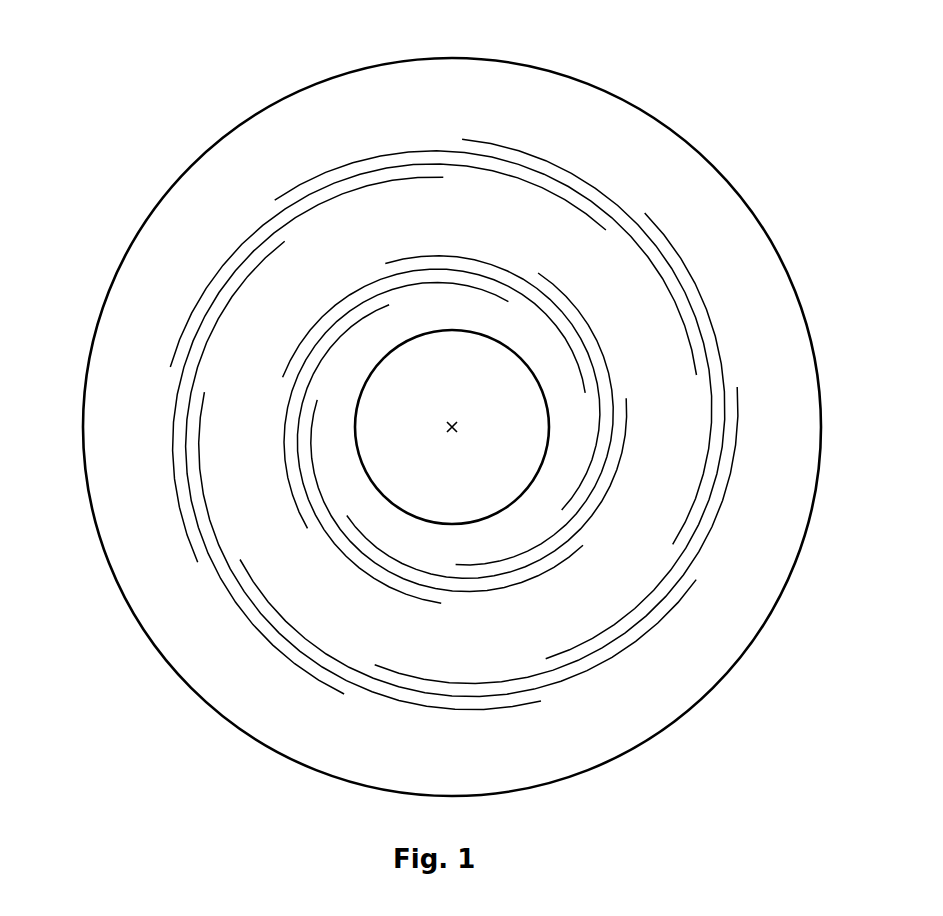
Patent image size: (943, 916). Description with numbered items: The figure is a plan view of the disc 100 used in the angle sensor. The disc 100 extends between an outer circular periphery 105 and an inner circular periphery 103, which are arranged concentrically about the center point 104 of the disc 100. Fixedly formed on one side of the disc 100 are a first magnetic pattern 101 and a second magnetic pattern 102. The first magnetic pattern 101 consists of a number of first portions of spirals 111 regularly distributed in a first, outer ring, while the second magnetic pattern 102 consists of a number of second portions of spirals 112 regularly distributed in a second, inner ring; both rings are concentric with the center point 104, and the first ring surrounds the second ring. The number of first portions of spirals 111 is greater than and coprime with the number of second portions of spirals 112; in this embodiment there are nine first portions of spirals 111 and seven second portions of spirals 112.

The disc 100 is at (111, 27).
The first magnetic pattern 101 is at (439, 424).
The second magnetic pattern 102 is at (444, 436).
The inner periphery 103 is at (430, 332).
The center point 104 is at (457, 424).
The outer periphery 105 is at (721, 167).
The first portions of spirals 111 is at (403, 180).
The second portions of spirals 112 is at (527, 581).